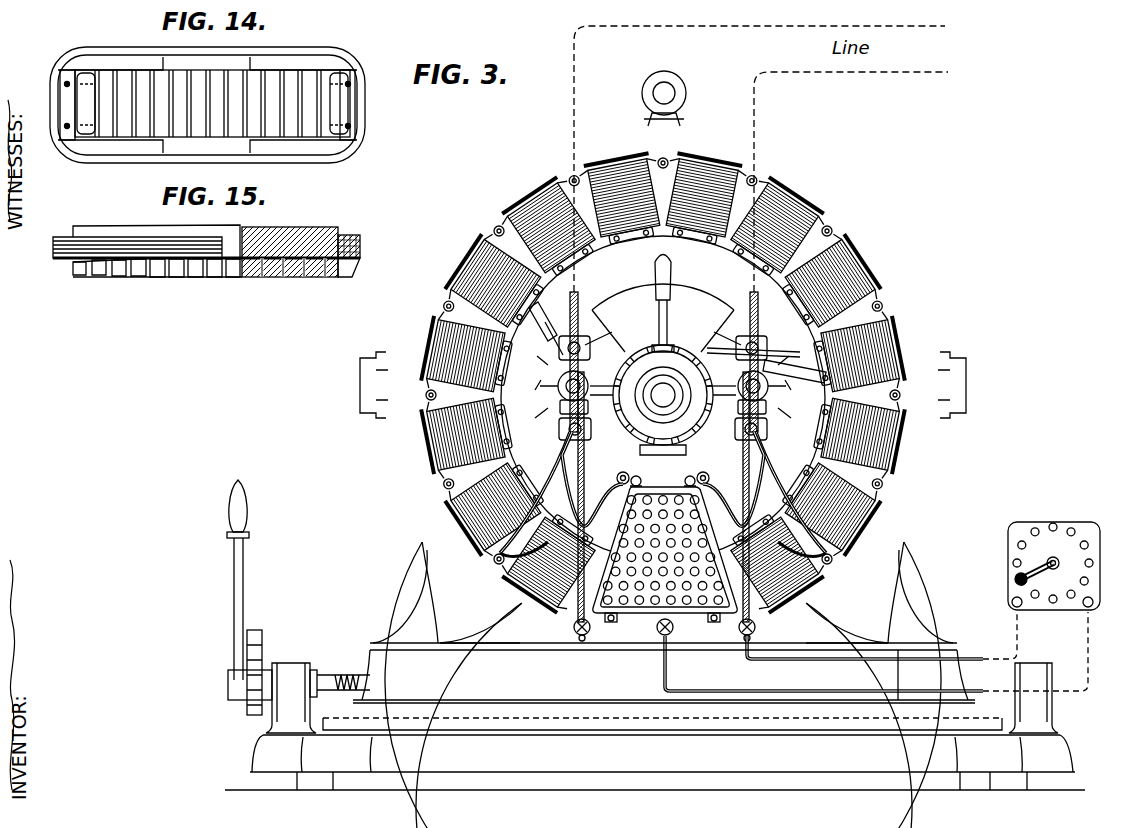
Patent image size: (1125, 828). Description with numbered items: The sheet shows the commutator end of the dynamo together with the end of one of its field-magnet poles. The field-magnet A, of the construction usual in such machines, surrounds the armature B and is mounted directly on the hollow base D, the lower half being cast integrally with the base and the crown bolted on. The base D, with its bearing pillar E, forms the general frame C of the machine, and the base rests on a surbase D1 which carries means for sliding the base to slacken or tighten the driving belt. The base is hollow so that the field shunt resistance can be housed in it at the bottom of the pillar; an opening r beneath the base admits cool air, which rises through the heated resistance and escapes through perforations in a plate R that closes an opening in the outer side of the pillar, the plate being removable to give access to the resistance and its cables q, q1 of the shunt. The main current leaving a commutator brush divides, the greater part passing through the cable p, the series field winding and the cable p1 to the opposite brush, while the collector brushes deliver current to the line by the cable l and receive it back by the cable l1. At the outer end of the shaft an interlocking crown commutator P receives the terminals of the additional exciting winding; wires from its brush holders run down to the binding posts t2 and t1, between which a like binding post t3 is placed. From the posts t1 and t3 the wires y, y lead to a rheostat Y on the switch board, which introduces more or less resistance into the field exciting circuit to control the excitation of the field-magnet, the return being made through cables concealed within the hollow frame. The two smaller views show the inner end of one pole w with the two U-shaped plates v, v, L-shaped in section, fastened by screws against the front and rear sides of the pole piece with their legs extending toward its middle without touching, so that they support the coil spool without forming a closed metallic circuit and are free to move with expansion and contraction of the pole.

In FIG. 3, the field-magnet A is at (897, 232).
In FIG. 3, the armature B is at (663, 398).
In FIG. 3, the interlocking crown commutator P is at (640, 342).
In FIG. 3, the cable l is at (759, 300).
In FIG. 3, the cable l1 is at (580, 300).
In FIG. 3, the cable p is at (770, 452).
In FIG. 3, the cable p1 is at (560, 478).
In FIG. 3, the cable q is at (708, 472).
In FIG. 3, the cable q1 is at (618, 477).
In FIG. 3, the plate R is at (662, 541).
In FIG. 3, the opening r is at (620, 560).
In FIG. 3, the binding post t1 is at (738, 629).
In FIG. 3, the binding post t2 is at (591, 629).
In FIG. 3, the binding post t3 is at (663, 640).
In FIG. 3, the wires y is at (876, 651).
In FIG. 3, the rheostat Y is at (1054, 549).
In FIG. 3, the bearing pillar E is at (483, 630).
In FIG. 3, the frame C is at (866, 624).
In FIG. 3, the base D is at (664, 673).
In FIG. 3, the surbase D1 is at (655, 754).
In FIG. 14, the U-shaped plates v is at (117, 58).
In FIG. 15, the U-shaped plates v is at (94, 263).
In FIG. 14, the pole w is at (212, 103).
In FIG. 15, the pole w is at (216, 268).